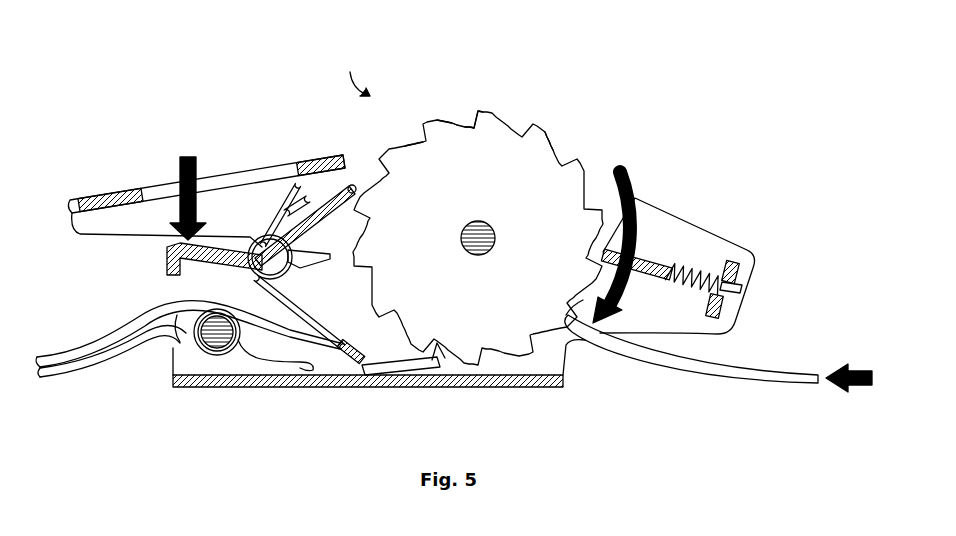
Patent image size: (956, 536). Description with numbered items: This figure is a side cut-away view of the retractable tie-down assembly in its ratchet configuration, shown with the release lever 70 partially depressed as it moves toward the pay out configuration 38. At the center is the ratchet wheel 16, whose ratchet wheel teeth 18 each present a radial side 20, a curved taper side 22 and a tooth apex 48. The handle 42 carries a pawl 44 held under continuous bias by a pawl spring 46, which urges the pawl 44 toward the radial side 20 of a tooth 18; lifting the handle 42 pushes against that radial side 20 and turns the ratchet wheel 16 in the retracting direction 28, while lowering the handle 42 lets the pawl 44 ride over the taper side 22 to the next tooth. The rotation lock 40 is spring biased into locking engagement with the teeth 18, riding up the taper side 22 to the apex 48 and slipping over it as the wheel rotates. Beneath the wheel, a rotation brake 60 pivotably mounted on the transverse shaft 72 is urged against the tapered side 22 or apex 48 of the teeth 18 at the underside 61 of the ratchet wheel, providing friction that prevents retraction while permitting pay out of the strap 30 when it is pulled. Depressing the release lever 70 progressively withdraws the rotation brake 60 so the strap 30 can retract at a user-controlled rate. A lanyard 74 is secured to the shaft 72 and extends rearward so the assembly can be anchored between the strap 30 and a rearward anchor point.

The ratchet wheel 16 is at (493, 128).
The ratchet wheel teeth 18 is at (533, 143).
The radial side 20 is at (418, 126).
The taper side 22 is at (449, 120).
The tooth apex 48 is at (478, 110).
The retracting direction 28 is at (632, 183).
The strap 30 is at (730, 372).
The pay out configuration 38 is at (347, 74).
The rotation lock 40 is at (657, 260).
The handle 42 is at (265, 170).
The pawl 44 is at (352, 184).
The pawl spring 46 is at (263, 240).
The rotation brake 60 is at (395, 368).
The underside 61 is at (447, 345).
The release lever 70 is at (207, 267).
The transverse shaft 72 is at (222, 338).
The lanyard 74 is at (107, 340).